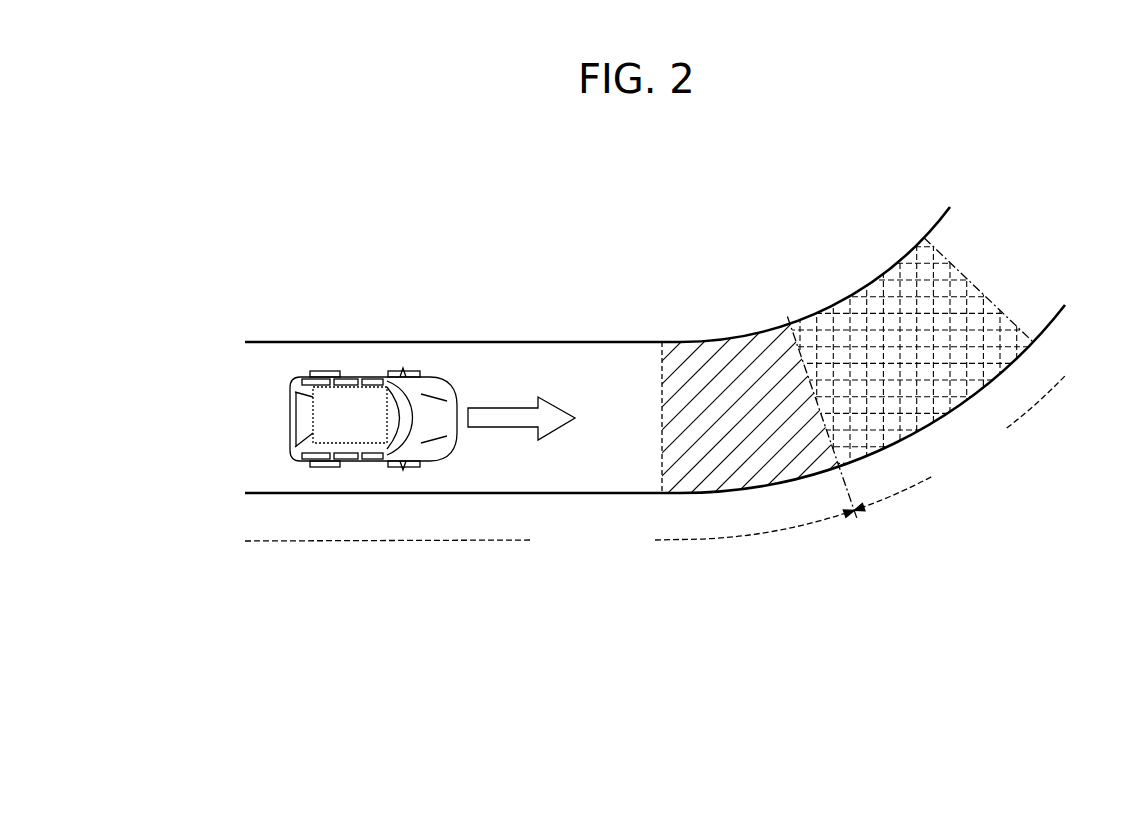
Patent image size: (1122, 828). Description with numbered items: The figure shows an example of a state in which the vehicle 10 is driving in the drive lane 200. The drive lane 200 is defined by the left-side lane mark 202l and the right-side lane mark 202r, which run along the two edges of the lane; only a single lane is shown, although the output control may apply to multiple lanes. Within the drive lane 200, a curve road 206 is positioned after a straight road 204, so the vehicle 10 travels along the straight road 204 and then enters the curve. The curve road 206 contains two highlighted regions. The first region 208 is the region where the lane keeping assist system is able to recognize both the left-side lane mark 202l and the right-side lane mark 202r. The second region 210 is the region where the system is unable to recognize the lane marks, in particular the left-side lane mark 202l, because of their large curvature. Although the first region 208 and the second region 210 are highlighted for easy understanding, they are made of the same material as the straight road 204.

The vehicle 10 is at (303, 415).
The drive lane 200 is at (626, 362).
The left-side lane mark 202l is at (262, 340).
The right-side lane mark 202r is at (262, 495).
The straight road 204 is at (573, 352).
The curve road 206 is at (795, 360).
The first region 208 is at (755, 347).
The second region 210 is at (827, 325).